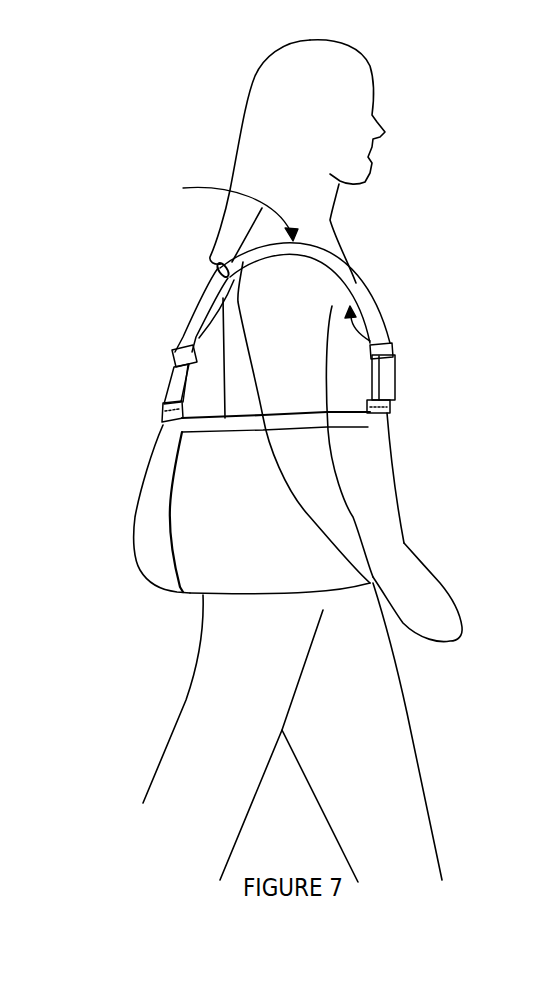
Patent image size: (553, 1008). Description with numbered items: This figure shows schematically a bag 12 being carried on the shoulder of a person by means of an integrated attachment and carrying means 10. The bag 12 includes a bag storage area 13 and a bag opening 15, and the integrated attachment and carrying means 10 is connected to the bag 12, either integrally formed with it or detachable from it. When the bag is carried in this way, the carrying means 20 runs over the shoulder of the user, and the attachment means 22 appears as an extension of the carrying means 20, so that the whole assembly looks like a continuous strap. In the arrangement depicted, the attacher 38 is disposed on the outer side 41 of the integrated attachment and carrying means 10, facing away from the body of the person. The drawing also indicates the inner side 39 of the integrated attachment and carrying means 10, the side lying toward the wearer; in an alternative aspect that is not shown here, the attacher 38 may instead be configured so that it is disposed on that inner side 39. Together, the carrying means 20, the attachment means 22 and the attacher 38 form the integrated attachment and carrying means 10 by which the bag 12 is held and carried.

The integrated attachment and holding means 10 is at (200, 287).
The bag 12 is at (148, 580).
The bag storage area 13 is at (372, 473).
The bag opening 15 is at (226, 425).
The carrying means 20 is at (362, 290).
The attachment means 22 is at (155, 378).
The attacher 38 is at (163, 392).
The inner side 39 is at (393, 343).
The outer side 41 is at (224, 208).